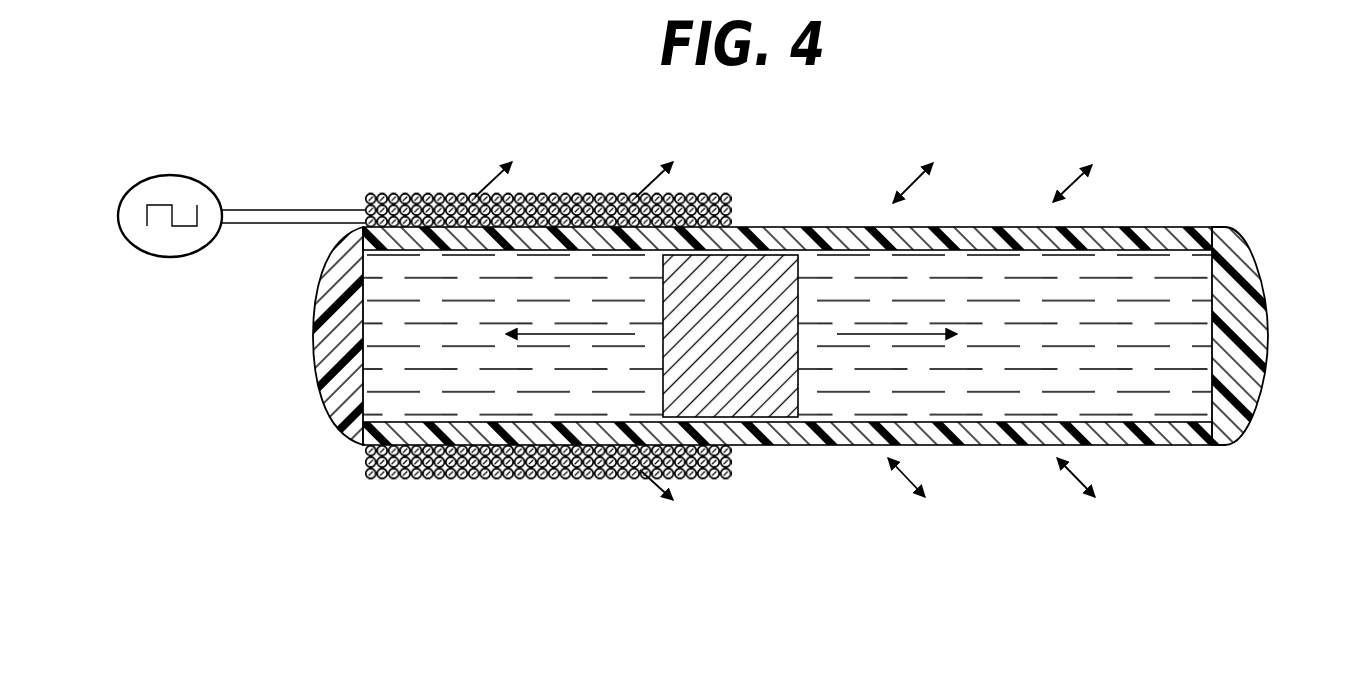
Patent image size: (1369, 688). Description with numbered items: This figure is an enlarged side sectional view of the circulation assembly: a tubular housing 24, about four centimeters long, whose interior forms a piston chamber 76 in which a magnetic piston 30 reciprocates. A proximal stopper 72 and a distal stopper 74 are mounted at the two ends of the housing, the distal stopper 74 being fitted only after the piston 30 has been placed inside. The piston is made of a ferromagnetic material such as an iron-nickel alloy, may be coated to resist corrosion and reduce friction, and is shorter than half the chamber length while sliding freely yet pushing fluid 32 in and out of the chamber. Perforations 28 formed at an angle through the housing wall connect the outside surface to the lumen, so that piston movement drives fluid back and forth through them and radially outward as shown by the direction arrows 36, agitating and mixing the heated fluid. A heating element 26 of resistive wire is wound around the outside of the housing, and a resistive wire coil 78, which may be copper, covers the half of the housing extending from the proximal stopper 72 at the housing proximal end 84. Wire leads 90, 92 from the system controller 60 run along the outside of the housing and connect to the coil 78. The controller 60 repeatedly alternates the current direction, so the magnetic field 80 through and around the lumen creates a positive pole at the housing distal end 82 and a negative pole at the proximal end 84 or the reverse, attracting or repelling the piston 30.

The tubular housing 24 is at (990, 226).
The heating element 26 is at (428, 192).
The perforations 28 is at (790, 236).
The magnetic piston 30 is at (757, 274).
The fluid 32 is at (1010, 383).
The direction arrows 36 is at (1068, 184).
The system controller 60 is at (168, 176).
The proximal stopper 72 is at (313, 375).
The distal stopper 74 is at (1268, 337).
The piston chamber 76 is at (1110, 422).
The resistive wire coil 78 is at (530, 480).
The magnetic field 80 is at (408, 484).
The housing distal end 82 is at (1172, 237).
The housing proximal end 84 is at (373, 435).
The wire lead 90 is at (280, 209).
The wire lead 92 is at (266, 224).